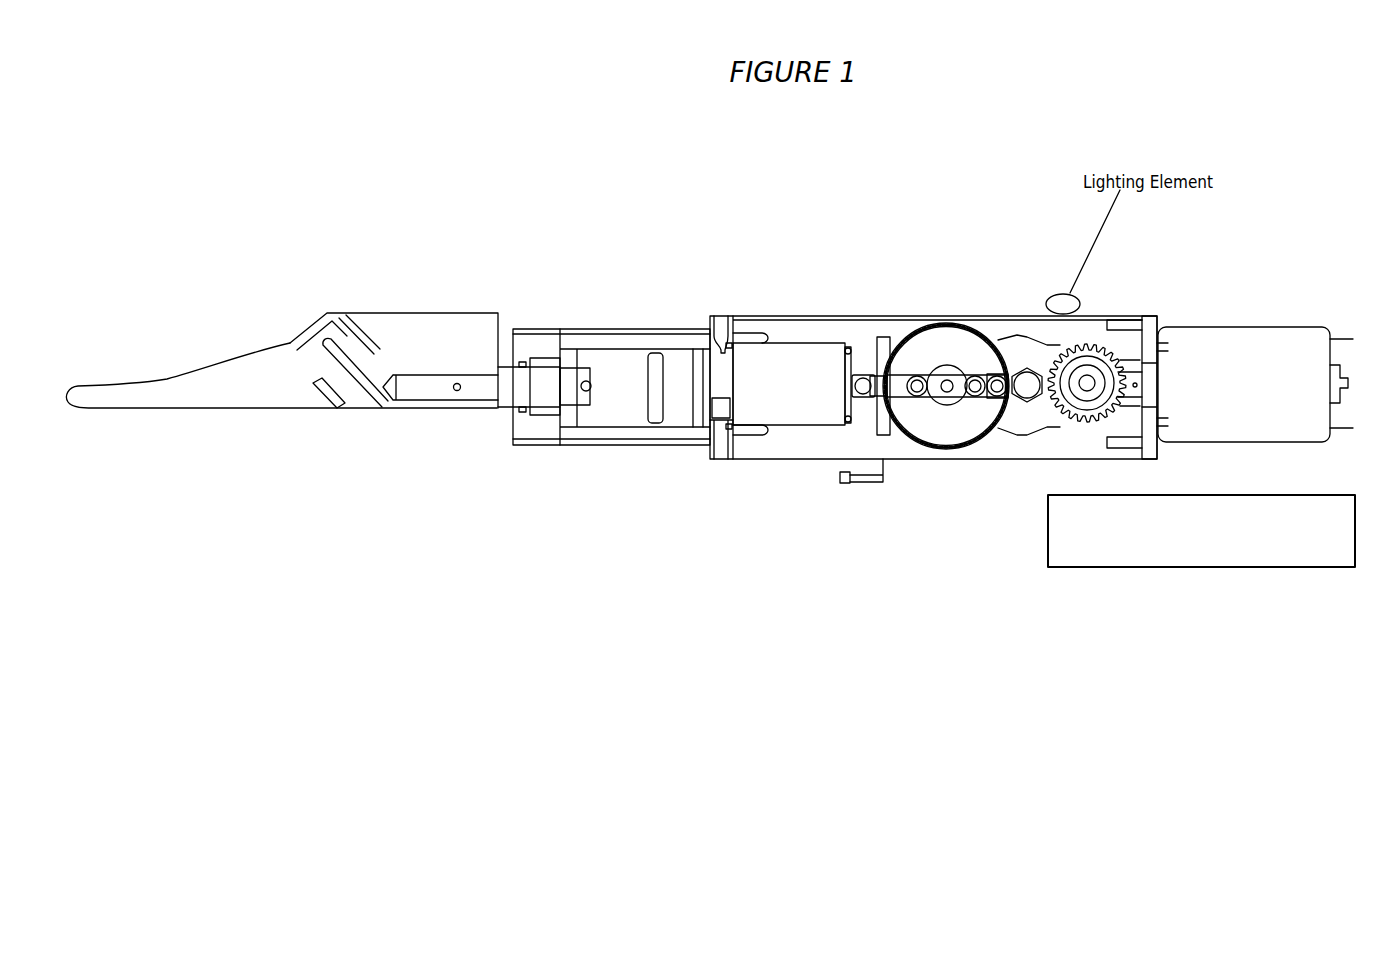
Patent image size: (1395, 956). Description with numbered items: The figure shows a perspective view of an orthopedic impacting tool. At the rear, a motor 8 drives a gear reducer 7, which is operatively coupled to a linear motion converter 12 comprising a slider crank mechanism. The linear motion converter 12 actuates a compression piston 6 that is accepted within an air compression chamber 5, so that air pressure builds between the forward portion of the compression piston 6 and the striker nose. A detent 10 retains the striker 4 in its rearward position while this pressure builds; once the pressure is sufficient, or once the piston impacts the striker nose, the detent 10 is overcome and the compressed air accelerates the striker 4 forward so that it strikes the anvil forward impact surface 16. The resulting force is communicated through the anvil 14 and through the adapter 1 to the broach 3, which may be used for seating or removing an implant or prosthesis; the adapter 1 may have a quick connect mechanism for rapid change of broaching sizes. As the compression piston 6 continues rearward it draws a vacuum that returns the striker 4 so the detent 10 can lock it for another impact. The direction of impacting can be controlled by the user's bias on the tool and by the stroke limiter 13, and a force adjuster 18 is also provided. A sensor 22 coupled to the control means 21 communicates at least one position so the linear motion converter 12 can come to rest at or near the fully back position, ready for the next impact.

The adapter 1 is at (398, 343).
The broach 3 is at (257, 387).
The striker 4 is at (653, 395).
The air compression chamber 5 is at (772, 372).
The compression piston 6 is at (850, 412).
The gear reducer 7 is at (1103, 338).
The motor 8 is at (1208, 366).
The detent 10 is at (718, 413).
The linear motion converter 12 is at (900, 383).
The stroke limiter 13 is at (537, 357).
The anvil 14 is at (552, 390).
The anvil forward impact surface 16 is at (587, 383).
The force adjuster 18 is at (720, 323).
The control means 21 is at (1038, 529).
The sensor 22 is at (847, 495).